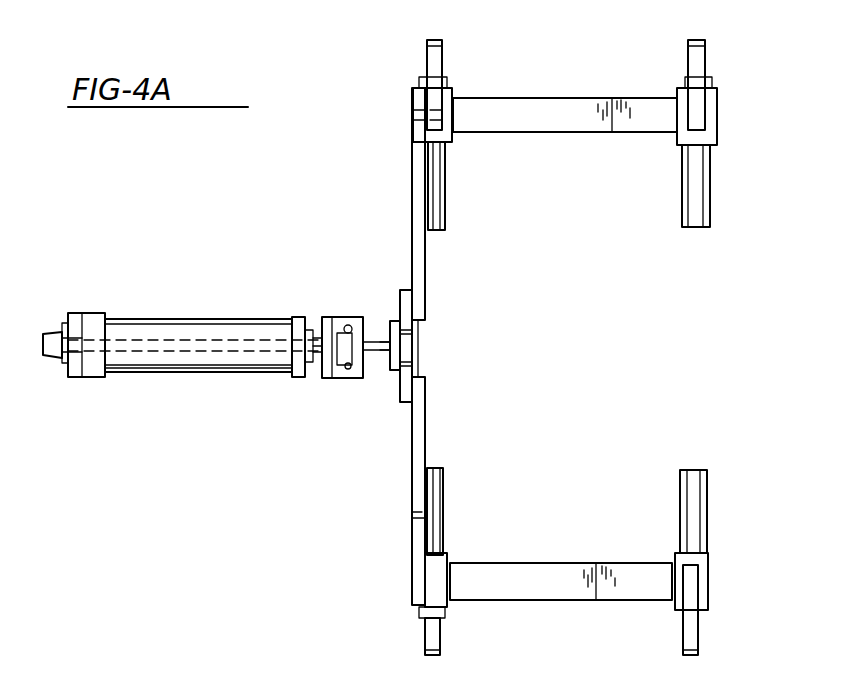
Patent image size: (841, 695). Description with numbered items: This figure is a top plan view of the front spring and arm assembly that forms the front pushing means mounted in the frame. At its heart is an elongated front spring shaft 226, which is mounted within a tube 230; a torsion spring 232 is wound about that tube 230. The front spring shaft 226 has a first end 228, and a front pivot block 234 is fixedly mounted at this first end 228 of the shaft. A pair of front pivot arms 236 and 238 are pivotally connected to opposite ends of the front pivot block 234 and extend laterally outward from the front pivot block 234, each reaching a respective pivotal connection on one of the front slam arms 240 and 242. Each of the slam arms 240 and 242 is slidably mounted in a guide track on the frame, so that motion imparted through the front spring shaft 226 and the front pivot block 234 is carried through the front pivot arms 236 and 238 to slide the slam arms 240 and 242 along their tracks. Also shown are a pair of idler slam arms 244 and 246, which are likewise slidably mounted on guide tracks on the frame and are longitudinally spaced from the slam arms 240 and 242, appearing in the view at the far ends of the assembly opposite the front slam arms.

The front spring shaft 226 is at (222, 345).
The first end 228 is at (413, 350).
The tube 230 is at (177, 333).
The torsion spring 232 is at (257, 318).
The front pivot block 234 is at (412, 380).
The front pivot arm 236 is at (425, 262).
The front pivot arm 238 is at (425, 448).
The front slam arm 240 is at (412, 105).
The front slam arm 242 is at (428, 538).
The idler slam arm 244 is at (718, 115).
The idler slam arm 246 is at (703, 517).